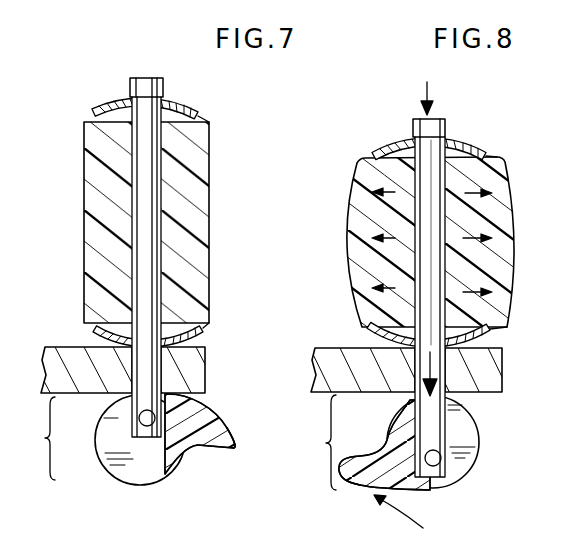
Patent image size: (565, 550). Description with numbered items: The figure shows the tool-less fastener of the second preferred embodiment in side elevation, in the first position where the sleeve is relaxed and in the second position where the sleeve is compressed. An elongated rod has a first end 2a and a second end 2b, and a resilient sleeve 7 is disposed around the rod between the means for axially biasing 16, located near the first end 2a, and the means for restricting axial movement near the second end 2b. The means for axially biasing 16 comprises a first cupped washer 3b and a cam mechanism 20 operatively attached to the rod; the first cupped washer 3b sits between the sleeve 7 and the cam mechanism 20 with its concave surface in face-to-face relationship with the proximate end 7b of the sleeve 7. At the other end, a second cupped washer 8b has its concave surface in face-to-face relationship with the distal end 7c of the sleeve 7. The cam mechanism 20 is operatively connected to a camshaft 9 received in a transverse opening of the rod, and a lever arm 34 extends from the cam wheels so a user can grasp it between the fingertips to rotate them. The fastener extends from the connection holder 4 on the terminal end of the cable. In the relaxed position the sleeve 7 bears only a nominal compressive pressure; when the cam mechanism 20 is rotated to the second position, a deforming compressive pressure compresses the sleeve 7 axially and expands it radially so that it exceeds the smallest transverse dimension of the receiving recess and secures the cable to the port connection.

In FIG. 7, the first end 2a is at (133, 437).
In FIG. 8, the first end 2a is at (431, 474).
In FIG. 7, the second end 2b is at (162, 86).
In FIG. 8, the second end 2b is at (446, 126).
In FIG. 7, the first cupped washer 3b is at (93, 328).
In FIG. 8, the first cupped washer 3b is at (368, 337).
In FIG. 7, the connection holder 4 is at (205, 365).
In FIG. 8, the connection holder 4 is at (502, 393).
In FIG. 7, the resilient sleeve 7 is at (209, 213).
In FIG. 8, the resilient sleeve 7 is at (516, 224).
In FIG. 7, the proximate end 7b is at (203, 326).
In FIG. 8, the proximate end 7b is at (498, 328).
In FIG. 7, the distal end 7c is at (210, 121).
In FIG. 8, the distal end 7c is at (497, 155).
In FIG. 7, the second cupped washer 8b is at (92, 113).
In FIG. 8, the second cupped washer 8b is at (373, 154).
In FIG. 7, the camshaft 9 is at (140, 414).
In FIG. 8, the camshaft 9 is at (440, 461).
In FIG. 7, the means for axially biasing 16 is at (38, 438).
In FIG. 8, the means for axially biasing 16 is at (317, 442).
In FIG. 7, the cam mechanism 20 is at (236, 422).
In FIG. 8, the cam mechanism 20 is at (480, 444).
In FIG. 7, the lever arm 34 is at (235, 450).
In FIG. 8, the lever arm 34 is at (358, 486).